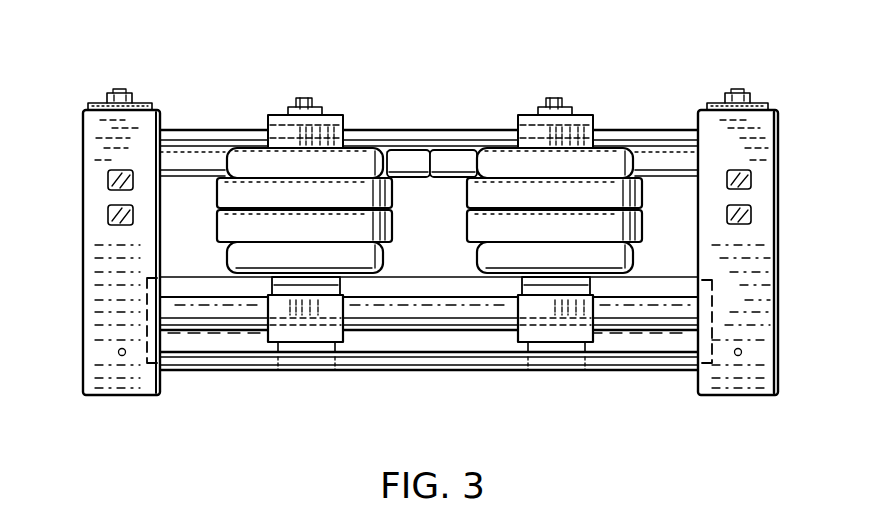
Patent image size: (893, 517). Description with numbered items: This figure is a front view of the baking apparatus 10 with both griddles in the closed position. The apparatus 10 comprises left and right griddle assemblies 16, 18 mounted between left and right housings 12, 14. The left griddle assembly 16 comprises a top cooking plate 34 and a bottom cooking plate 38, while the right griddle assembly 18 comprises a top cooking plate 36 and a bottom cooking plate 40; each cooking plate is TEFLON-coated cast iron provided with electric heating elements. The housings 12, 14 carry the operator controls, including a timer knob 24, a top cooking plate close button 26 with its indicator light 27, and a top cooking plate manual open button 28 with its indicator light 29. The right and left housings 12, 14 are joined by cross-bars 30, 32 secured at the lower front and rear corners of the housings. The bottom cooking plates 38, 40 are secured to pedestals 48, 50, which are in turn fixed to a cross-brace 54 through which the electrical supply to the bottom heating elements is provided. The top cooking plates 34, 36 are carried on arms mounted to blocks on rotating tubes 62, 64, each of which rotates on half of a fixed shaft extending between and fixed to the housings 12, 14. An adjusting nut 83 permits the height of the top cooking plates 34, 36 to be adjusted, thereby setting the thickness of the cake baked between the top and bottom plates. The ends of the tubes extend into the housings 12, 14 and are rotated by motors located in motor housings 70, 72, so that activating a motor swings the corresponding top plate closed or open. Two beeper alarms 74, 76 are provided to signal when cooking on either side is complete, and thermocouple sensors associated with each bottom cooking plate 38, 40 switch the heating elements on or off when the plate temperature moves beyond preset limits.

The waffle cone baking apparatus 10 is at (243, 52).
The left housing 12 is at (83, 250).
The right housing 14 is at (780, 305).
The left griddle assembly 16 is at (280, 180).
The right griddle assembly 18 is at (579, 176).
The timer knob 24 is at (750, 97).
The top cooking plate close button 26 is at (791, 181).
The indicator light 27 is at (751, 180).
The top cooking plate manual open button 28 is at (792, 226).
The indicator light 29 is at (743, 222).
The cross-bar 30 is at (437, 370).
The cross-bar 32 is at (447, 130).
The top cooking plate 34 is at (253, 195).
The top cooking plate 36 is at (605, 198).
The bottom cooking plate 38 is at (257, 225).
The bottom cooking plate 40 is at (598, 232).
The pedestal 48 is at (323, 310).
The pedestal 50 is at (533, 300).
The cross-brace 54 is at (403, 297).
The rotating tube 62 is at (400, 160).
The rotating tube 64 is at (455, 158).
The motor housing 70 is at (223, 340).
The motor housing 72 is at (638, 342).
The beeper alarm 74 is at (118, 352).
The beeper alarm 76 is at (741, 352).
The adjusting nut 83 is at (303, 105).